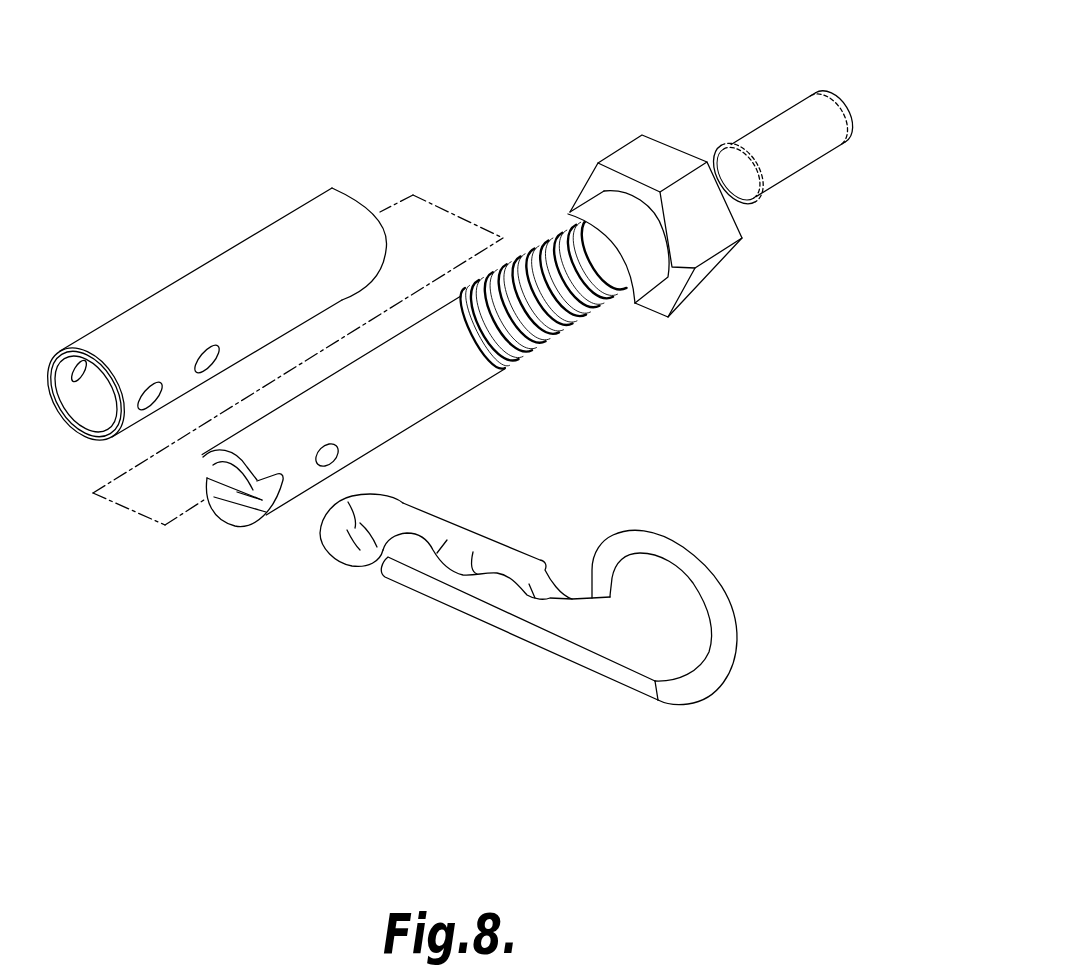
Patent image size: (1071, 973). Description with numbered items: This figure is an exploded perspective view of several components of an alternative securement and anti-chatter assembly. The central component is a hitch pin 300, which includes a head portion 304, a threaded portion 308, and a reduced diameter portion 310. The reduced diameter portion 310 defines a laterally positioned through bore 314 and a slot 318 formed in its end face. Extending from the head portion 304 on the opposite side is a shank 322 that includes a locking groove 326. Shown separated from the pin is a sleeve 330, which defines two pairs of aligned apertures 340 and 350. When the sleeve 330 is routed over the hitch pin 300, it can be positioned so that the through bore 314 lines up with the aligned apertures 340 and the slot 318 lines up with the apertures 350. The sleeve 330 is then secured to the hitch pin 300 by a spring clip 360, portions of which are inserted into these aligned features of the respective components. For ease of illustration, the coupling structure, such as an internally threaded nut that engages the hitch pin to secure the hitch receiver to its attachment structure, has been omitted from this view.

The hitch pin 300 is at (601, 124).
The head portion 304 is at (717, 268).
The threaded portion 308 is at (575, 332).
The reduced diameter portion 310 is at (447, 386).
The through bore 314 is at (327, 456).
The slot 318 is at (235, 515).
The shank 322 is at (818, 113).
The locking groove 326 is at (735, 160).
The sleeve 330 is at (328, 232).
The aligned apertures 340 is at (214, 350).
The apertures 350 is at (150, 384).
The spring clip 360 is at (683, 553).